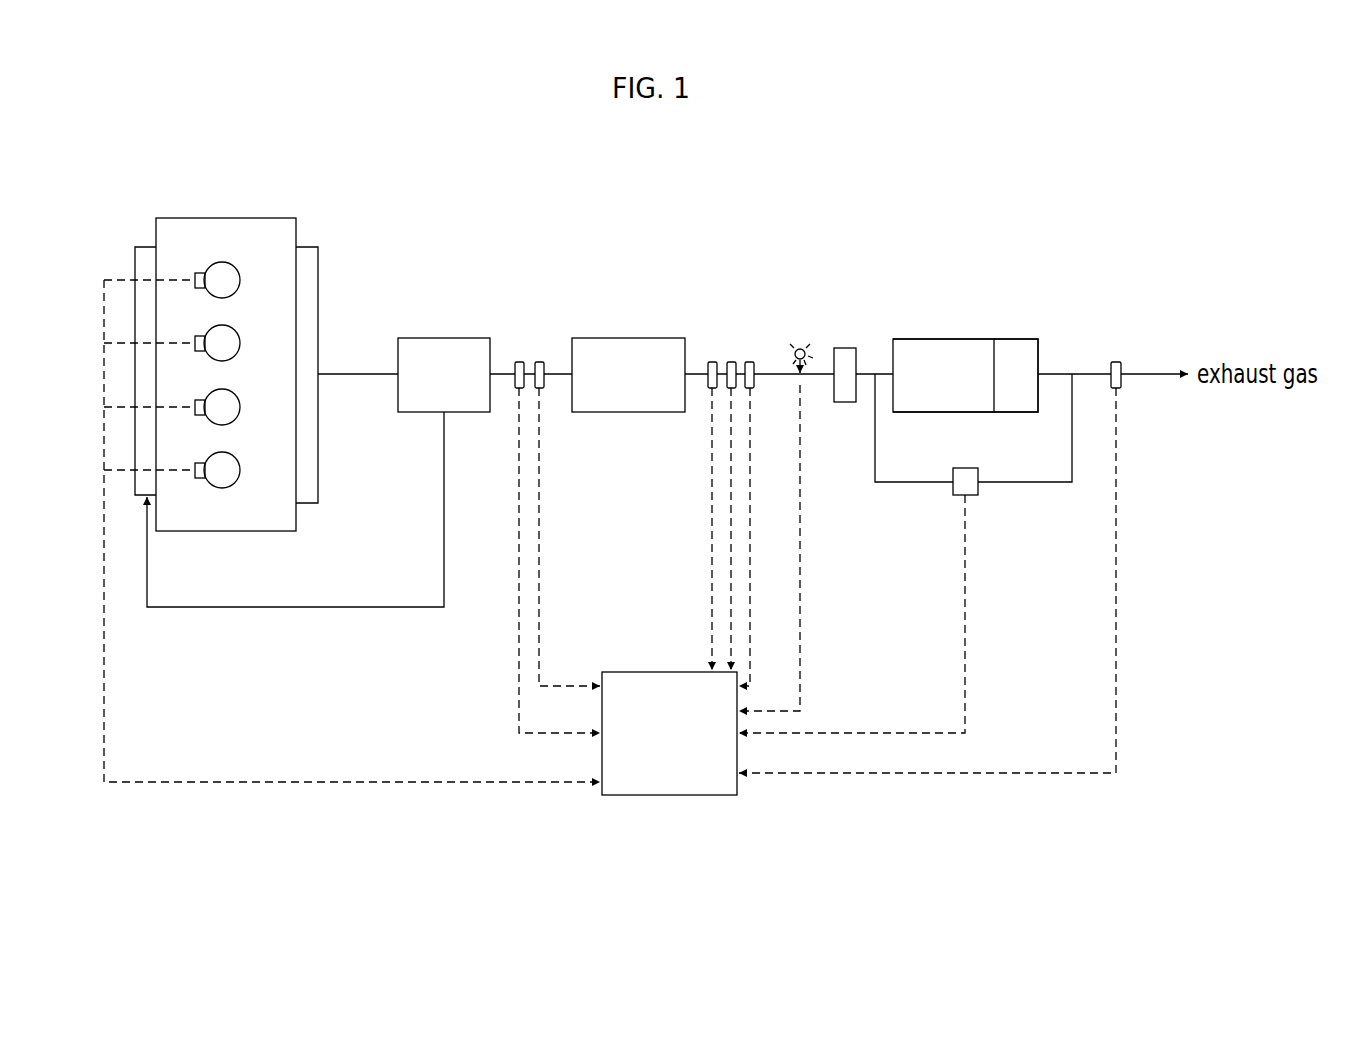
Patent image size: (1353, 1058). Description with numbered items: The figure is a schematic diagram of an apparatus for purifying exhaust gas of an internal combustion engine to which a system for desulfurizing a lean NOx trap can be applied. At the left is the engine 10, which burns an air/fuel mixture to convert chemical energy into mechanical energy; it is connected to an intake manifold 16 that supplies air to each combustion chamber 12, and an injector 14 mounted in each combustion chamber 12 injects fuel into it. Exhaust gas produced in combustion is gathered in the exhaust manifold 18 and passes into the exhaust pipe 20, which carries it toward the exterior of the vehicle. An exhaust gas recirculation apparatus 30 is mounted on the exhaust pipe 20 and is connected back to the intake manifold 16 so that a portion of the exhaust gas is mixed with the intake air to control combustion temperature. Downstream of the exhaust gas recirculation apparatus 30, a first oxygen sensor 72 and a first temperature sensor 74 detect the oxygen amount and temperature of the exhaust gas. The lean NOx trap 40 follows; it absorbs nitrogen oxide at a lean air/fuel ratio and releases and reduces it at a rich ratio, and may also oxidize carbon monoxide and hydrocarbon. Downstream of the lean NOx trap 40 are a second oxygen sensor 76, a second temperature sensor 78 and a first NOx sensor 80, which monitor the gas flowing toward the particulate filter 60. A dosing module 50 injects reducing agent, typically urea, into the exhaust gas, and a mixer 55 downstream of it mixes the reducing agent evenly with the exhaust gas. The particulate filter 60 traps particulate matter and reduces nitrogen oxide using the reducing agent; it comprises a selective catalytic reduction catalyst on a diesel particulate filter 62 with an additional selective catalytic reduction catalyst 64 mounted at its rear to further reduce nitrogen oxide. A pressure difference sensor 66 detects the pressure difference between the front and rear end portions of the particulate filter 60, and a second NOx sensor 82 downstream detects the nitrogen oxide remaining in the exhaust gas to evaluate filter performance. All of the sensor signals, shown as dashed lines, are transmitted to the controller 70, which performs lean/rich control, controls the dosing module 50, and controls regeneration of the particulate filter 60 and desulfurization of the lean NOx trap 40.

The engine 10 is at (216, 323).
The combustion chamber 12 is at (222, 262).
The injector 14 is at (195, 275).
The intake manifold 16 is at (141, 247).
The exhaust manifold 18 is at (313, 247).
The exhaust pipe 20 is at (358, 374).
The exhaust gas recirculation apparatus 30 is at (422, 338).
The lean NOx trap 40 is at (622, 338).
The dosing module 50 is at (797, 345).
The mixer 55 is at (842, 348).
The particulate filter 60 is at (968, 325).
The selective catalytic reduction catalyst on a diesel particulate filter 62 is at (913, 339).
The additional selective catalytic reduction catalyst 64 is at (1020, 339).
The pressure difference sensor 66 is at (973, 495).
The controller 70 is at (658, 797).
The first oxygen sensor 72 is at (518, 362).
The first temperature sensor 74 is at (539, 362).
The second oxygen sensor 76 is at (712, 362).
The second temperature sensor 78 is at (731, 362).
The first NOx sensor 80 is at (750, 362).
The second NOx sensor 82 is at (1117, 362).